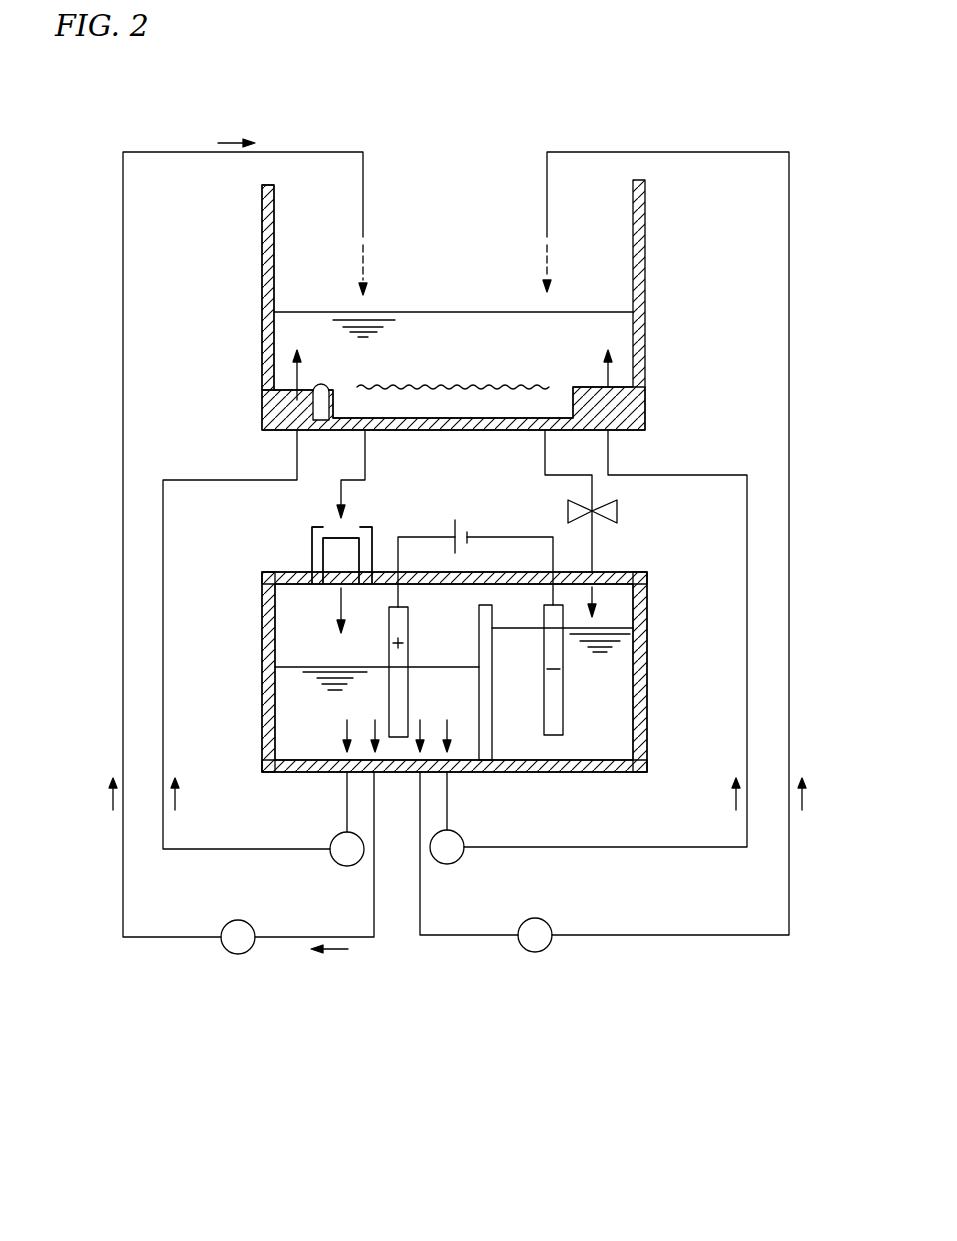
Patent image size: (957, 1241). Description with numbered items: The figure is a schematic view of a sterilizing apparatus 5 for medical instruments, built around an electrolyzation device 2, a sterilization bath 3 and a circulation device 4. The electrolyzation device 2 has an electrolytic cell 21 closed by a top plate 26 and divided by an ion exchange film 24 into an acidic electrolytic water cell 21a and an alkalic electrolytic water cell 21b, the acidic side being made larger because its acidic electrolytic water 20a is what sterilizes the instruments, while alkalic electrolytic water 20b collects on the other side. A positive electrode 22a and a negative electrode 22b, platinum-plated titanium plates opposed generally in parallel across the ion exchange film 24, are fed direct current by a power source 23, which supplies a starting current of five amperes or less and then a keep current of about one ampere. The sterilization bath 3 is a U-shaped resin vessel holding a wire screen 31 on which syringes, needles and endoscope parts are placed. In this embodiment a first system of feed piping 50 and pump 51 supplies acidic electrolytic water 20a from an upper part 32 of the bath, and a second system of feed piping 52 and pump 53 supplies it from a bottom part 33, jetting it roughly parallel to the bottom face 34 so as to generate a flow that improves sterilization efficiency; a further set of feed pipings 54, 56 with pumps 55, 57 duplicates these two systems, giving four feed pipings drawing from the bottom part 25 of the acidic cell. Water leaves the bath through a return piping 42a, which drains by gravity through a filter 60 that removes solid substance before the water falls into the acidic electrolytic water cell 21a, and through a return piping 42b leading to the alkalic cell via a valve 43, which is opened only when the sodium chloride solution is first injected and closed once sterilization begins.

The electrolyzation device 2 is at (465, 656).
The sterilization bath 3 is at (461, 439).
The circulation device 4 is at (460, 601).
The sterilizing apparatus 5 is at (575, 130).
The acidic electrolytic water 20a is at (620, 327).
The alkalic electrolytic water 20b is at (617, 694).
The electrolytic cell 21 is at (637, 637).
The acidic electrolytic water cell 21a is at (290, 620).
The alkalic electrolytic water cell 21b is at (617, 607).
The positive electrode 22a is at (410, 642).
The negative electrode 22b is at (542, 617).
The power source 23 is at (467, 517).
The ion exchange film 24 is at (483, 613).
The bottom part 25 is at (318, 752).
The top plate 26 is at (378, 573).
The wire screen 31 is at (377, 380).
The upper part 32 is at (288, 190).
The bottom part 33 is at (281, 368).
The bottom face 34 is at (317, 421).
The return piping 42a is at (365, 458).
The return piping 42b is at (545, 458).
The valve 43 is at (618, 511).
The feed piping 50 is at (123, 444).
The pump 51 is at (236, 920).
The feed piping 52 is at (163, 672).
The pump 53 is at (346, 867).
The feed piping 54 is at (789, 640).
The pump 55 is at (535, 918).
The feed piping 56 is at (747, 718).
The pump 57 is at (464, 840).
The filter 60 is at (322, 540).